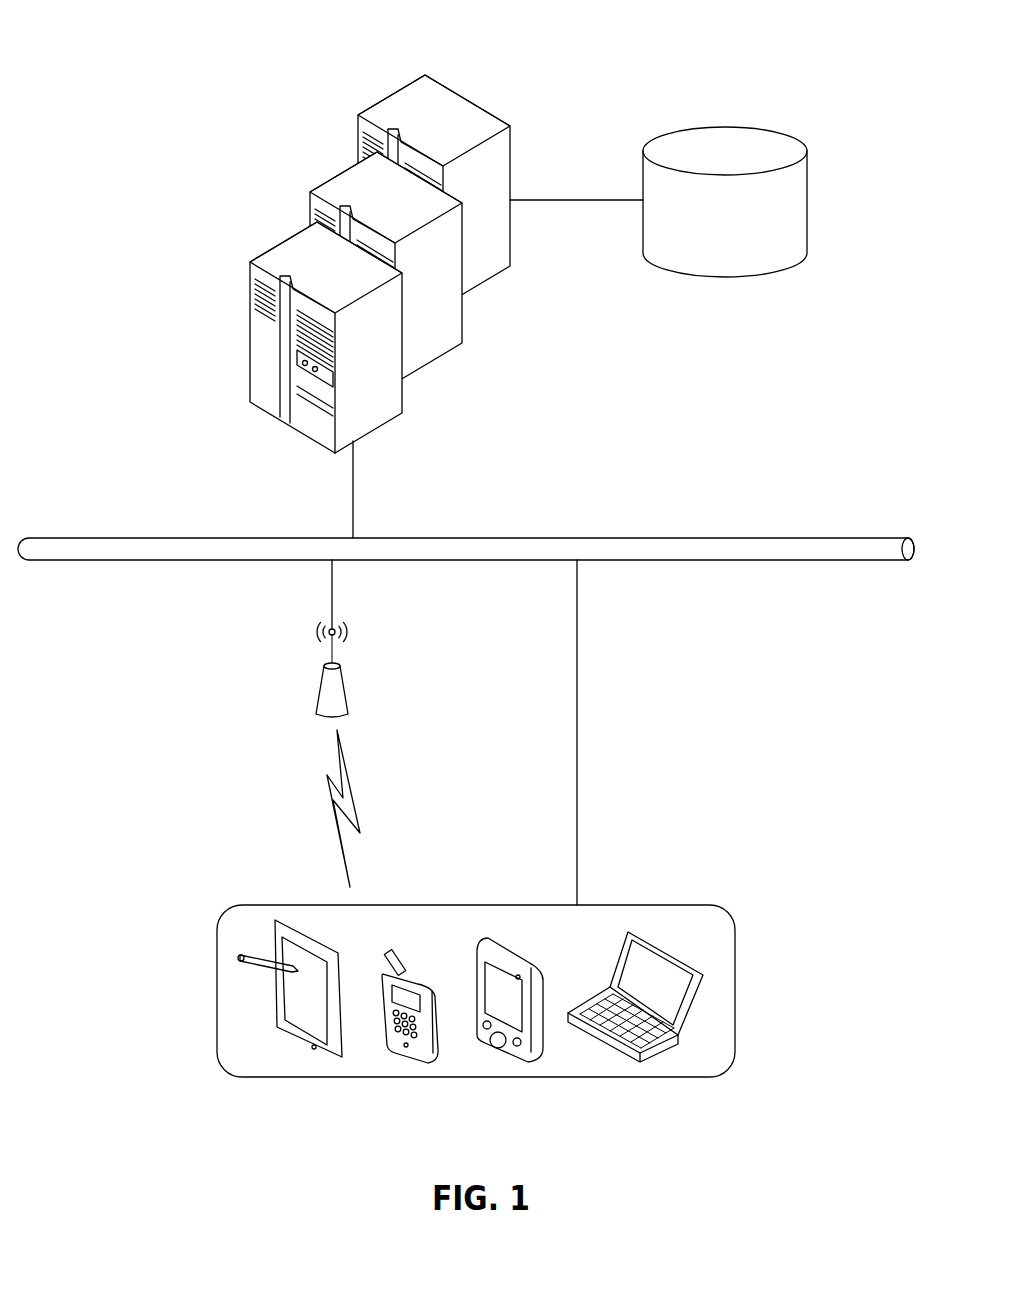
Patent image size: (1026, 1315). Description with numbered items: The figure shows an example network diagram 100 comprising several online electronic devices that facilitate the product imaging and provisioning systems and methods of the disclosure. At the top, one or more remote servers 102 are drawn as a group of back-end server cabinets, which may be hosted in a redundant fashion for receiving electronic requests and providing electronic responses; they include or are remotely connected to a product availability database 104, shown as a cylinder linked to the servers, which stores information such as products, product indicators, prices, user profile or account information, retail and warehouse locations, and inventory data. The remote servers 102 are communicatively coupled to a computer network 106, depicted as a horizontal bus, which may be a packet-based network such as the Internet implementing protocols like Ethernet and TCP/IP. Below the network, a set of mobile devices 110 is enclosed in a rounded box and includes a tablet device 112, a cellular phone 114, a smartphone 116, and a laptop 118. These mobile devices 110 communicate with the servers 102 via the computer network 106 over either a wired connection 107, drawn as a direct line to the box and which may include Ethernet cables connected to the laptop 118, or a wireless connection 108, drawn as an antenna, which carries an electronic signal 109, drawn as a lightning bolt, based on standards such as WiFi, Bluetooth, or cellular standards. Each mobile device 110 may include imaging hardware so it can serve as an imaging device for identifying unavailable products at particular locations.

The network diagram 100 is at (263, 37).
The remote server 102 is at (474, 98).
The product availability database 104 is at (745, 126).
The computer network 106 is at (728, 537).
The wired connection 107 is at (578, 678).
The wireless connection 108 is at (346, 688).
The electronic signal 109 is at (355, 795).
The mobile device 110 is at (493, 905).
The tablet device 112 is at (307, 1053).
The cellular phone 114 is at (420, 1057).
The smartphone 116 is at (515, 1058).
The laptop 118 is at (633, 1060).